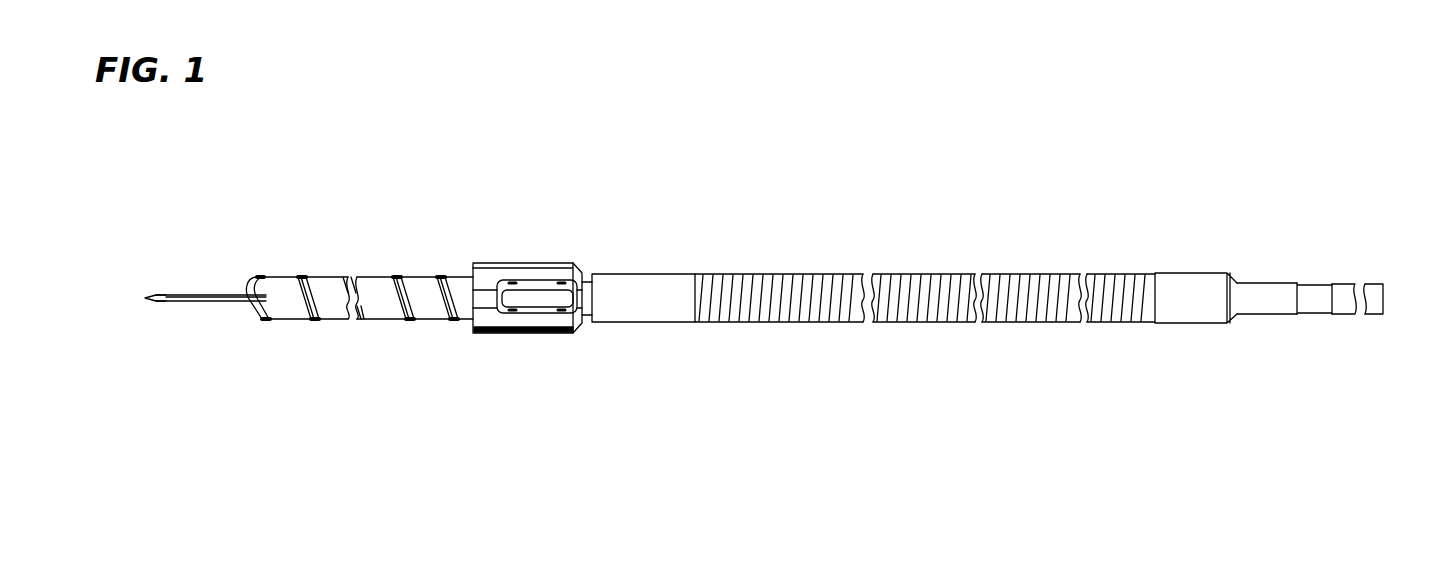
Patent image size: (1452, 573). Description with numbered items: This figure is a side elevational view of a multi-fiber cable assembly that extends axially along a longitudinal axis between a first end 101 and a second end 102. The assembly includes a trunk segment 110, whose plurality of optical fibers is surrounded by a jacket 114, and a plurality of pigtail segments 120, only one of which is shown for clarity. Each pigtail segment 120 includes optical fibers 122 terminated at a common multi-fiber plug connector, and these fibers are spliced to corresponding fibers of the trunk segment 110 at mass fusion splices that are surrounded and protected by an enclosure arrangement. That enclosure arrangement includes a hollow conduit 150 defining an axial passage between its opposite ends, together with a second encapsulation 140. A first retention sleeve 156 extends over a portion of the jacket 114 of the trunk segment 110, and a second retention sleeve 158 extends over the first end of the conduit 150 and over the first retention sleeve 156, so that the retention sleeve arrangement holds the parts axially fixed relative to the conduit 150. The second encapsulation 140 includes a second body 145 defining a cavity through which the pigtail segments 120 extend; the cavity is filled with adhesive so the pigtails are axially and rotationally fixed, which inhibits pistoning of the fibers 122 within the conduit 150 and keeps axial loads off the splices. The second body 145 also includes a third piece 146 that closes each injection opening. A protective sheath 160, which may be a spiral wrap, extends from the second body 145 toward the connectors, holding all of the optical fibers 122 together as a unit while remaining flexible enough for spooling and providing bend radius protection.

The first end 101 is at (121, 298).
The second end 102 is at (1404, 297).
The trunk segment 110 is at (1348, 272).
The jacket 114 is at (1343, 314).
The pigtail segment 120 is at (198, 281).
The optical fibers 122 is at (147, 301).
The second encapsulation 140 is at (519, 240).
The second body 145 is at (485, 318).
The third piece 146 is at (537, 308).
The hollow conduit 150 is at (938, 274).
The first retention sleeve 156 is at (647, 274).
The second retention sleeve 158 is at (1193, 273).
The protective sheath 160 is at (374, 262).